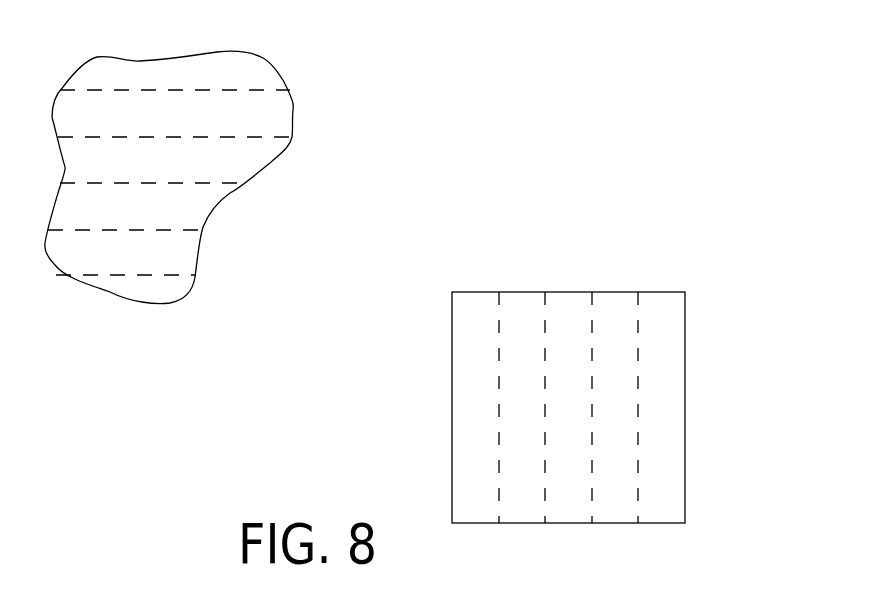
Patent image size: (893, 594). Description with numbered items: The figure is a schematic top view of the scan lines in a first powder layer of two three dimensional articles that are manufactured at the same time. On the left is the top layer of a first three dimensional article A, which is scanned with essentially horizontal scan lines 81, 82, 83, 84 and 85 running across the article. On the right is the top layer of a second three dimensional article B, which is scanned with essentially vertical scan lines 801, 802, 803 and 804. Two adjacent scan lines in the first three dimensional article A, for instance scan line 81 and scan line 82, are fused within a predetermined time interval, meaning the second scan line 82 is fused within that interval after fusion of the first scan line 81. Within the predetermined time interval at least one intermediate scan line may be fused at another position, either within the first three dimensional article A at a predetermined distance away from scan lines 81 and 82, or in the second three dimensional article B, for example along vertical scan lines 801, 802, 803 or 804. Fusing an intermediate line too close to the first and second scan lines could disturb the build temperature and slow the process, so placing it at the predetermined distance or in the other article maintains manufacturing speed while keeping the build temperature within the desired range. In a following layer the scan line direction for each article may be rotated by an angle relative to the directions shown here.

The first three dimensional article A is at (338, 43).
The horizontal scan line 81 is at (290, 90).
The horizontal scan line 82 is at (292, 137).
The horizontal scan line 83 is at (247, 190).
The horizontal scan line 84 is at (205, 230).
The horizontal scan line 85 is at (195, 277).
The second three dimensional article B is at (733, 243).
The vertical scan line 801 is at (500, 292).
The vertical scan line 802 is at (546, 292).
The vertical scan line 803 is at (593, 292).
The vertical scan line 804 is at (639, 292).